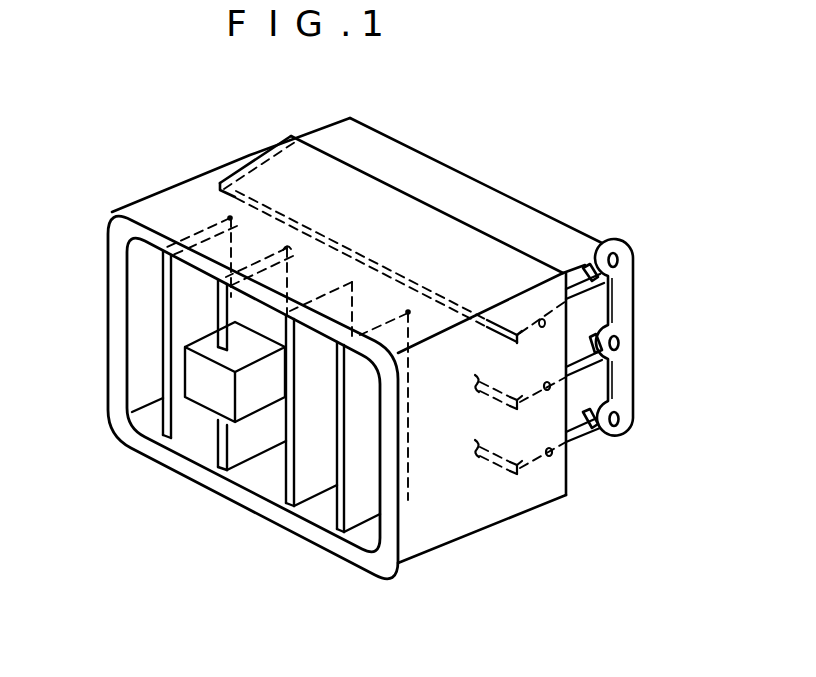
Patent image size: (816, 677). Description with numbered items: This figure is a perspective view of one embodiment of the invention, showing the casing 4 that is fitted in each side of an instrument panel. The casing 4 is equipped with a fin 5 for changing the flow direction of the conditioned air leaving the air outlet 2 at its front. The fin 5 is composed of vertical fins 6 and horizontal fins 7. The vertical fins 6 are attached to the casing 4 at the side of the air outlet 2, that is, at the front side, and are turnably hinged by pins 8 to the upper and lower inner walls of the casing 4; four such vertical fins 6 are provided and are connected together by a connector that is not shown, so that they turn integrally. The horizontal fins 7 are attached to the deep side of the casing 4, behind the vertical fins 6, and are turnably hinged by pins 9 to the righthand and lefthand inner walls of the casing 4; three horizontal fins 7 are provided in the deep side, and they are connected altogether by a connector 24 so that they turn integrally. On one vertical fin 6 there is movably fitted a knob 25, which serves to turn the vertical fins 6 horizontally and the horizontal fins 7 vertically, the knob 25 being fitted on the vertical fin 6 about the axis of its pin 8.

The air outlet 2 is at (143, 345).
The casing 4 is at (453, 523).
The fin 5 is at (278, 475).
The vertical fins 6 is at (307, 480).
The horizontal fins 7 is at (552, 213).
The pins 8 is at (222, 216).
The pins 9 is at (549, 458).
The connector 24 is at (633, 308).
The knob 25 is at (188, 413).